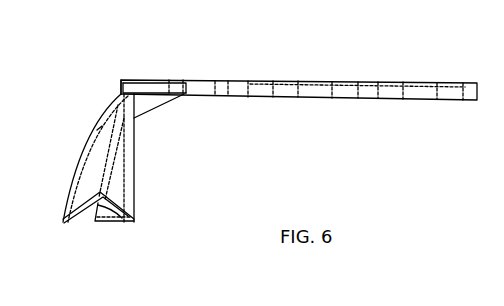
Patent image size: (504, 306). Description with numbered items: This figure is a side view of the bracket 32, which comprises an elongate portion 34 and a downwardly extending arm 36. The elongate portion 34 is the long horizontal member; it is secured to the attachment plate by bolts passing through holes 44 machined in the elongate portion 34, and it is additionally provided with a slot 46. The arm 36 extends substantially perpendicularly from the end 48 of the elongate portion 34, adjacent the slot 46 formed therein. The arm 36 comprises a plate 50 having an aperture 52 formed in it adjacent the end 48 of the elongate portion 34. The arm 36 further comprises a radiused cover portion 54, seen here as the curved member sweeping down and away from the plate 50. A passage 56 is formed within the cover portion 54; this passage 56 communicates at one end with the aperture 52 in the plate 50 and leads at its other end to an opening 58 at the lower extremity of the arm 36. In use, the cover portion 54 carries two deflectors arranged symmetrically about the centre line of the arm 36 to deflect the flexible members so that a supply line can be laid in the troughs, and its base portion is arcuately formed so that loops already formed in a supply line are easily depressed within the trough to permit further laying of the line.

The bracket 32 is at (214, 71).
The elongate portion 34 is at (318, 80).
The downwardly extending arm 36 is at (72, 160).
The holes 44 is at (444, 83).
The slot 46 is at (136, 88).
The end 48 is at (122, 79).
The plate 50 is at (133, 178).
The aperture 52 is at (128, 129).
The radiused cover portion 54 is at (113, 101).
The passage 56 is at (115, 133).
The opening 58 is at (83, 216).